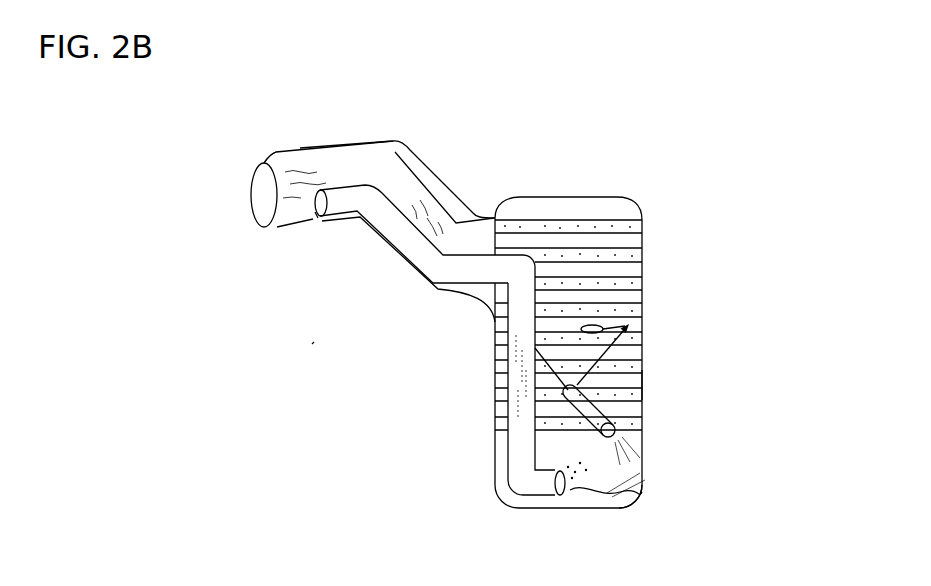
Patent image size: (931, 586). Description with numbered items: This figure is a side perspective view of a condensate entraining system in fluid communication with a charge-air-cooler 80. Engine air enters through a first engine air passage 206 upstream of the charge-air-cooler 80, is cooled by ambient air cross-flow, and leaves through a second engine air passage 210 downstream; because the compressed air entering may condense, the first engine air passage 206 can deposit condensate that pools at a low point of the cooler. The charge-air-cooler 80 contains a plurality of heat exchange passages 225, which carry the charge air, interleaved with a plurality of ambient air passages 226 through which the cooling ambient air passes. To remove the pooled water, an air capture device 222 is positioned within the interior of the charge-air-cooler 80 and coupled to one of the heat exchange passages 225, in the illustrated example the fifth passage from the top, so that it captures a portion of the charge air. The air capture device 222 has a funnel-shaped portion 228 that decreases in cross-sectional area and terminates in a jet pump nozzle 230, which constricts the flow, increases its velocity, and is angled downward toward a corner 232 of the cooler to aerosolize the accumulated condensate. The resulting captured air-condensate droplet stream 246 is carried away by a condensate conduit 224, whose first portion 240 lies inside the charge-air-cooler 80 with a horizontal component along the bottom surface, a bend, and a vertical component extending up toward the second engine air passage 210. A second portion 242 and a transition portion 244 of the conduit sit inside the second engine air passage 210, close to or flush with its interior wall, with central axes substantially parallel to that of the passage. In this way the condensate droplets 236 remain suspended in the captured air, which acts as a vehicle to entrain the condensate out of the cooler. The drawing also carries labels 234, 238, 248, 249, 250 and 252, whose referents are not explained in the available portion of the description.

The charge-air-cooler 80 is at (585, 197).
The first engine air passage 206 is at (420, 150).
The second engine air passage 210 is at (327, 155).
The air capture device 222 is at (701, 382).
The condensate conduit 224 is at (312, 344).
The heat exchange passages 225 is at (644, 323).
The ambient air passages 226 is at (623, 247).
The funnel-shaped portion 228 is at (589, 363).
The jet pump nozzle 230 is at (604, 414).
The corner 232 is at (645, 497).
The nozzle feed line 234 is at (630, 326).
The condensate droplets 236 is at (590, 490).
The conduit outlet 238 is at (276, 152).
The first portion 240 is at (473, 372).
The second portion 242 is at (345, 225).
The transition portion 244 is at (385, 275).
The droplet stream 246 is at (523, 432).
The inner conduit outflow 248 is at (331, 203).
The outer conduit outflow 249 is at (326, 170).
The channel inlet opening 250 is at (558, 500).
The inner conduit outlet 252 is at (318, 218).